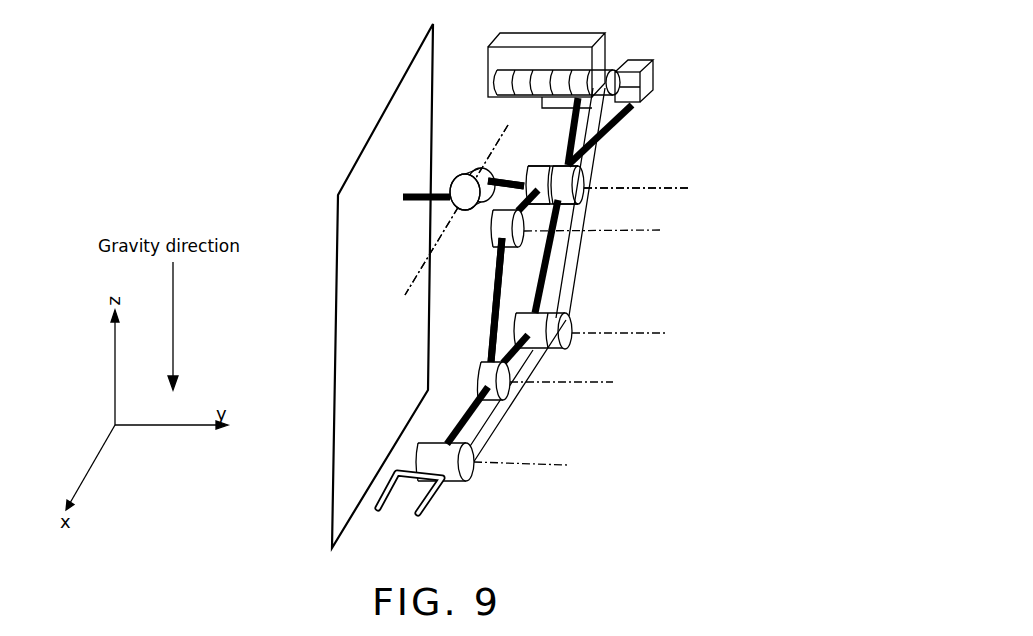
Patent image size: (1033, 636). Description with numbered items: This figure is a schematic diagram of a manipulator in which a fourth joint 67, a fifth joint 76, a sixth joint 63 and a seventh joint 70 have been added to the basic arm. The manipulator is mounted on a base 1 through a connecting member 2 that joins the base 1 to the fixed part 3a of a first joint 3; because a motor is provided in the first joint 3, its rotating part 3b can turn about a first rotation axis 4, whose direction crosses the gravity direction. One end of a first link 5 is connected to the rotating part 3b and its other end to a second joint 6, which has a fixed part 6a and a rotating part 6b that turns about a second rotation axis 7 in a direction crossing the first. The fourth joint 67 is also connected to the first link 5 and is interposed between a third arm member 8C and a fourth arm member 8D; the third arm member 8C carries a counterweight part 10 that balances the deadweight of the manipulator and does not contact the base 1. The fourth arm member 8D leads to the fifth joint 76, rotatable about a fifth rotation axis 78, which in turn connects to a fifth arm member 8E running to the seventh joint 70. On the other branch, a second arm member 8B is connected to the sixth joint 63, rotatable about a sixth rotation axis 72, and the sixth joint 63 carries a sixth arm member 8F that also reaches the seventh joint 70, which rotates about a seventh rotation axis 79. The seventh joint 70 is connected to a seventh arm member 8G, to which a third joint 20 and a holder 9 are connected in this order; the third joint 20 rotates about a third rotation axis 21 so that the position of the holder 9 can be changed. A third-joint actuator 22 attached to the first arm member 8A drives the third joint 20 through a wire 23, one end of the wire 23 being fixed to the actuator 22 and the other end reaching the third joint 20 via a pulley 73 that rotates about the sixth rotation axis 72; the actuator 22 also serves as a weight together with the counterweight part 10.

The base 1 is at (337, 195).
The connecting member 2 is at (405, 198).
The first joint 3 is at (301, 98).
The fixed part 3a is at (447, 197).
The rotating part 3b is at (497, 190).
The first rotation axis 4 is at (420, 270).
The first link 5 is at (527, 187).
The second joint 6 is at (697, 137).
The fixed part 6a is at (592, 168).
The rotating part 6b is at (588, 186).
The second rotation axis 7 is at (690, 188).
The first arm member 8A is at (567, 160).
The second arm member 8B is at (588, 262).
The third arm member 8C is at (625, 115).
The fourth arm member 8D is at (578, 221).
The fifth arm member 8E is at (493, 297).
The sixth arm member 8F is at (507, 381).
The seventh arm member 8G is at (470, 410).
The holder 9 is at (433, 508).
The counterweight part 10 is at (620, 58).
The third joint 20 is at (473, 477).
The third rotation axis 21 is at (567, 465).
The third-joint actuator 22 is at (645, 84).
The wire 23 is at (580, 235).
The sixth joint 63 is at (485, 350).
The fourth joint 67 is at (520, 168).
The seventh joint 70 is at (507, 357).
The sixth rotation axis 72 is at (665, 333).
The pulley 73 is at (560, 340).
The fifth joint 76 is at (455, 215).
The fifth rotation axis 78 is at (640, 228).
The seventh rotation axis 79 is at (613, 382).